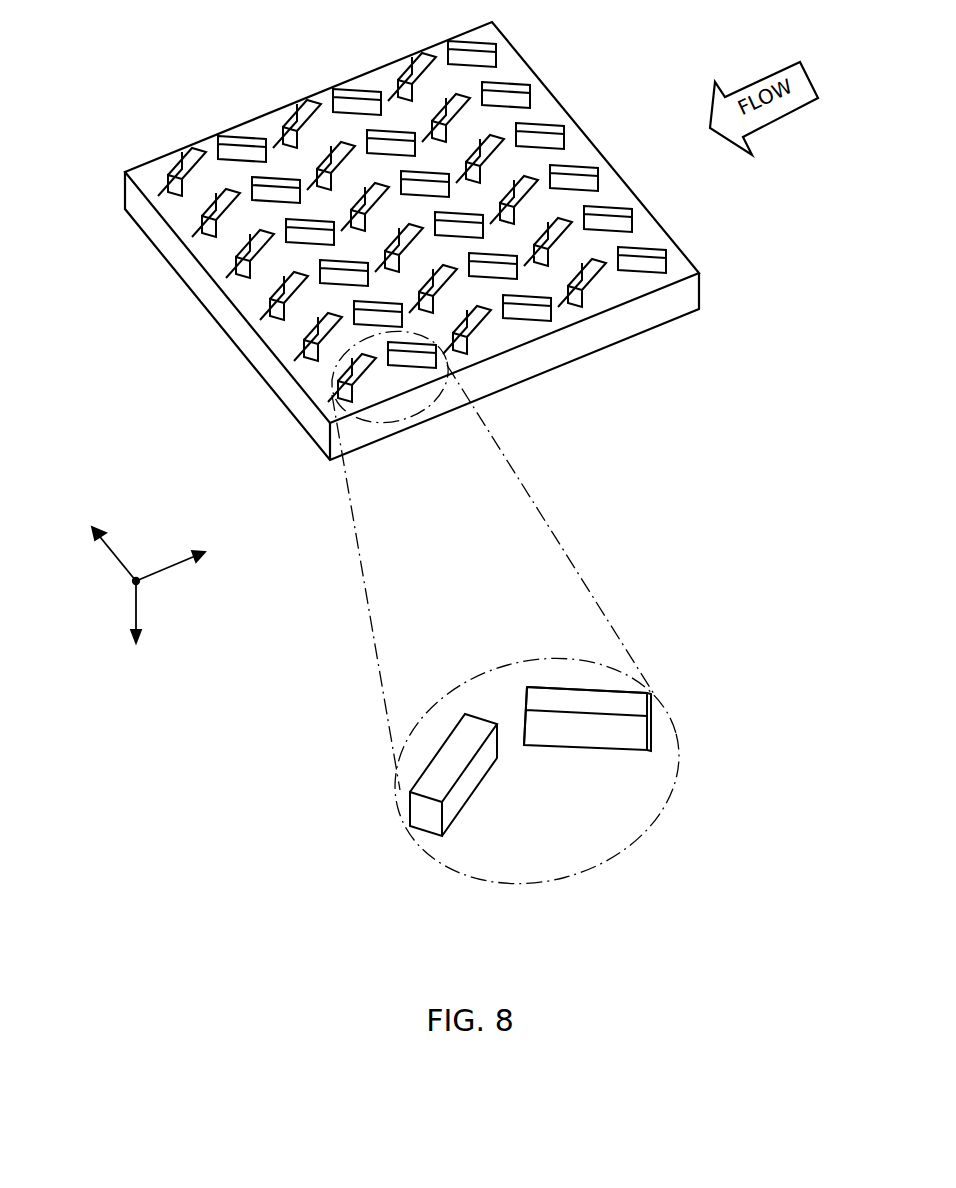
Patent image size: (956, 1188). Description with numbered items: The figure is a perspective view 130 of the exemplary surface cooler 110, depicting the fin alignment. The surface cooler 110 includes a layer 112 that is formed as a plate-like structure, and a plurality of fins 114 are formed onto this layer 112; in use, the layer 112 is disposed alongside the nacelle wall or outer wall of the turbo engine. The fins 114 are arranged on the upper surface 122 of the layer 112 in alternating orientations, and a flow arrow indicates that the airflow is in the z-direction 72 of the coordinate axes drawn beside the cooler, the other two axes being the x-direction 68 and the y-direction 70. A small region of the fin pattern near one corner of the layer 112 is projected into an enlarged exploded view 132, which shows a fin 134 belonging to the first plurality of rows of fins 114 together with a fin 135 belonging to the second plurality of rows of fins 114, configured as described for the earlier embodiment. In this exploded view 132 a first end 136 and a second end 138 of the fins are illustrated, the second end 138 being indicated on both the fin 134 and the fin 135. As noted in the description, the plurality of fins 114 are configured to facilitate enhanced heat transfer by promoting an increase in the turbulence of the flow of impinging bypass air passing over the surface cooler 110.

The surface cooler 110 is at (422, 444).
The layer 112 is at (208, 288).
The fins 114 is at (547, 128).
The plate surface 122 is at (578, 153).
The perspective view 130 is at (223, 66).
The exploded view 132 is at (640, 680).
The fin 134 is at (455, 803).
The fin 135 is at (585, 743).
The first end 136 is at (650, 728).
The second end 138 is at (523, 715).
The X axis 68 is at (112, 557).
The Y axis 70 is at (137, 602).
The z-direction 72 is at (173, 567).